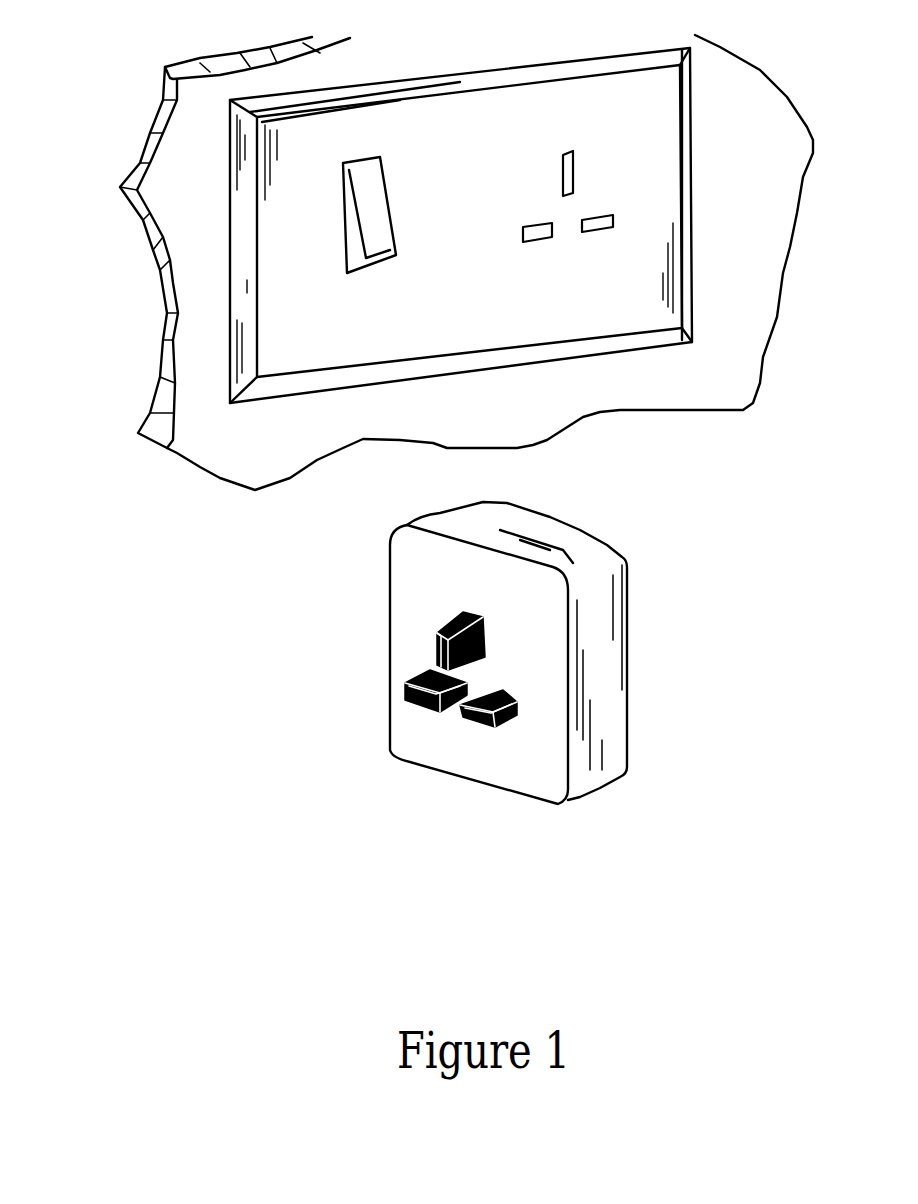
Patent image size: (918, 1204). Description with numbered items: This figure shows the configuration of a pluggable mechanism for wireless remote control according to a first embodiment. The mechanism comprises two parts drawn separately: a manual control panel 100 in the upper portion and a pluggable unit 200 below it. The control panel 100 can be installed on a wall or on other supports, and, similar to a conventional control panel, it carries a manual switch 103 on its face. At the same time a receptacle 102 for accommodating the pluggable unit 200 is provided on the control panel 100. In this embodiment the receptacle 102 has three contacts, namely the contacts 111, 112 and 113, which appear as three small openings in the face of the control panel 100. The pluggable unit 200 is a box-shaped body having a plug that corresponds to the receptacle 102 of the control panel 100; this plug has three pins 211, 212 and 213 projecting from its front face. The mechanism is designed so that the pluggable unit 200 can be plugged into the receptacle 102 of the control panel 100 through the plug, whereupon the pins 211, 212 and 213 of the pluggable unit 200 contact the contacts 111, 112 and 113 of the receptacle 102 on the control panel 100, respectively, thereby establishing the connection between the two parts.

The manual control panel 100 is at (376, 225).
The receptacle 102 is at (547, 205).
The manual switch 103 is at (384, 199).
The contact 111 is at (597, 157).
The contact 112 is at (611, 259).
The contact 113 is at (520, 281).
The pluggable unit 200 is at (410, 582).
The pin 211 is at (385, 637).
The pin 212 is at (347, 691).
The pin 213 is at (622, 711).